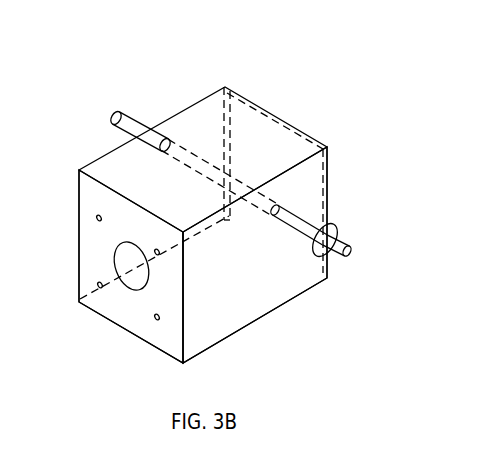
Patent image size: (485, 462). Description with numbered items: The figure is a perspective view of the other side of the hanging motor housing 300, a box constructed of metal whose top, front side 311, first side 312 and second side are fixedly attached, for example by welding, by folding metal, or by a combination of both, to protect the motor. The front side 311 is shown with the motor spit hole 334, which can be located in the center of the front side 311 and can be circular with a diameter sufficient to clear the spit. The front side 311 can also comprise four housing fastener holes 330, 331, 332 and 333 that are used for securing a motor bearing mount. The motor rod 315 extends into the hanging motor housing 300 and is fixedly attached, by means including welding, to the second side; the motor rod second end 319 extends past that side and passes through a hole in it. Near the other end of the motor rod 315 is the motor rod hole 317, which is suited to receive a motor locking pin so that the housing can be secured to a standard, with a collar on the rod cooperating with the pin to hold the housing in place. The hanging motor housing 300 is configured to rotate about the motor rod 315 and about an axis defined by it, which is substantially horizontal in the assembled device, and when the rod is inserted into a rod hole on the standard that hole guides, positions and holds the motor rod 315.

The hanging motor housing 300 is at (278, 43).
The front side 311 is at (120, 304).
The first side 312 is at (217, 319).
The motor rod 315 is at (305, 215).
The motor rod hole 317 is at (343, 241).
The motor rod second end 319 is at (128, 112).
The housing fastener hole 330 is at (159, 319).
The housing fastener hole 331 is at (160, 251).
The housing fastener hole 332 is at (98, 216).
The housing fastener hole 333 is at (98, 284).
The motor spit hole 334 is at (120, 260).